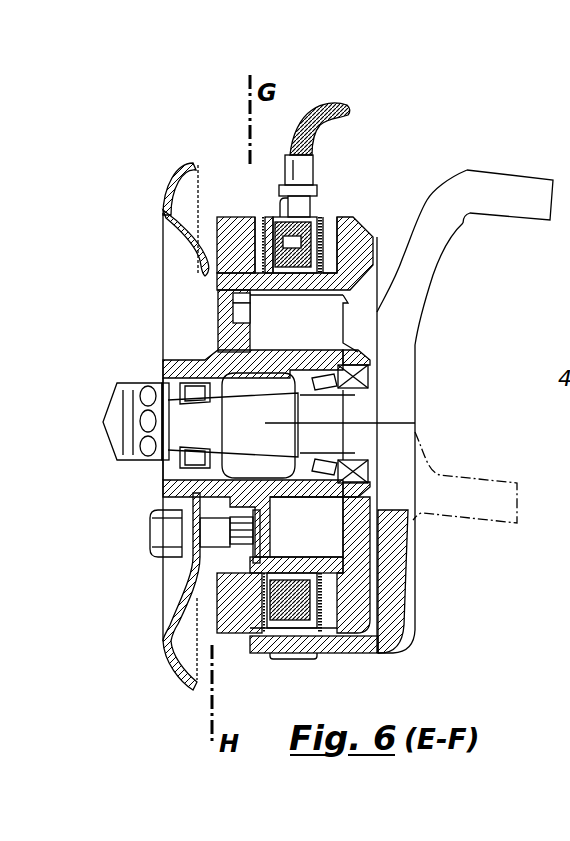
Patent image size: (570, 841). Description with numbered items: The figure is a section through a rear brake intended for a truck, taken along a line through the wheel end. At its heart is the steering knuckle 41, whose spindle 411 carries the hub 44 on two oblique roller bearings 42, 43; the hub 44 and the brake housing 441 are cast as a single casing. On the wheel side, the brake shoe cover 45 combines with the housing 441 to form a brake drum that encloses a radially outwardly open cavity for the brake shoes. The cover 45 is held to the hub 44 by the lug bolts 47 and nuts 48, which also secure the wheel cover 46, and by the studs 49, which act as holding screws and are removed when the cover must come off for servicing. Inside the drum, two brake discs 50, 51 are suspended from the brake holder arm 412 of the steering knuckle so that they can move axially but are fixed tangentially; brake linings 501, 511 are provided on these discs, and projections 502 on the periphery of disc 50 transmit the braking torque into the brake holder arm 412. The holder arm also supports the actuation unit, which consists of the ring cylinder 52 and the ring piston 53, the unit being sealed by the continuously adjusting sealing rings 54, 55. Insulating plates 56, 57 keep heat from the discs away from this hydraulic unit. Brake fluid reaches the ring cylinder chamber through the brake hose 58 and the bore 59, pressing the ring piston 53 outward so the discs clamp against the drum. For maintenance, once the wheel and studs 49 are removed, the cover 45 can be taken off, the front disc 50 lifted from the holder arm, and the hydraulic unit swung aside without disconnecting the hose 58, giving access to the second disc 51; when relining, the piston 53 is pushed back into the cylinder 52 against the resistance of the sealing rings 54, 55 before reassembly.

The steering knuckle 41 is at (405, 290).
The spindle 411 is at (415, 425).
The brake holder arm 412 is at (343, 643).
The oblique roller bearing 42 is at (167, 383).
The oblique roller bearing 43 is at (368, 373).
The hub 44 is at (285, 358).
The housing 441 is at (347, 253).
The wheel side brake shoe cover 45 is at (163, 207).
The wheel cover 46 is at (163, 640).
The lug bolt 47 is at (213, 533).
The nut 48 is at (172, 525).
The stud 49 is at (227, 323).
The brake disc 50 is at (263, 213).
The brake lining 501 is at (266, 217).
The projection 502 is at (491, 483).
The brake disc 51 is at (330, 218).
The brake lining 511 is at (333, 218).
The ring cylinder 52 is at (400, 627).
The ring piston 53 is at (328, 597).
The sealing ring 54 is at (287, 640).
The sealing ring 55 is at (285, 585).
The insulating plate 56 is at (267, 213).
The insulating plate 57 is at (322, 218).
The brake hose 58 is at (328, 108).
The bore 59 is at (365, 218).